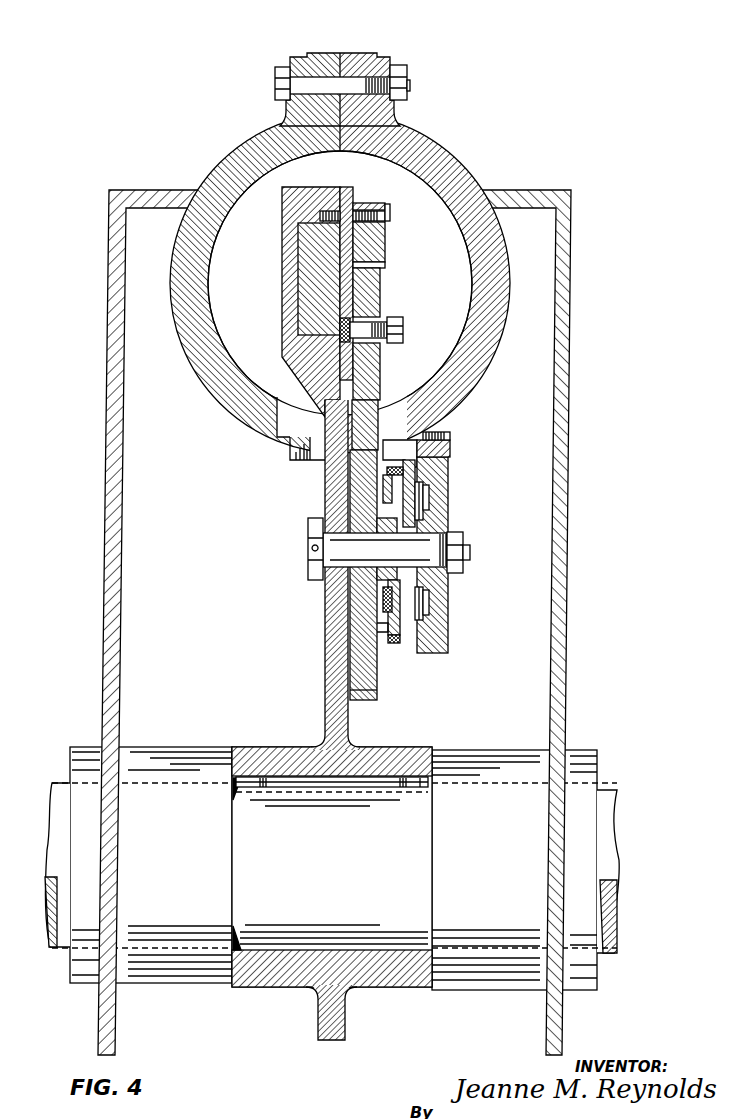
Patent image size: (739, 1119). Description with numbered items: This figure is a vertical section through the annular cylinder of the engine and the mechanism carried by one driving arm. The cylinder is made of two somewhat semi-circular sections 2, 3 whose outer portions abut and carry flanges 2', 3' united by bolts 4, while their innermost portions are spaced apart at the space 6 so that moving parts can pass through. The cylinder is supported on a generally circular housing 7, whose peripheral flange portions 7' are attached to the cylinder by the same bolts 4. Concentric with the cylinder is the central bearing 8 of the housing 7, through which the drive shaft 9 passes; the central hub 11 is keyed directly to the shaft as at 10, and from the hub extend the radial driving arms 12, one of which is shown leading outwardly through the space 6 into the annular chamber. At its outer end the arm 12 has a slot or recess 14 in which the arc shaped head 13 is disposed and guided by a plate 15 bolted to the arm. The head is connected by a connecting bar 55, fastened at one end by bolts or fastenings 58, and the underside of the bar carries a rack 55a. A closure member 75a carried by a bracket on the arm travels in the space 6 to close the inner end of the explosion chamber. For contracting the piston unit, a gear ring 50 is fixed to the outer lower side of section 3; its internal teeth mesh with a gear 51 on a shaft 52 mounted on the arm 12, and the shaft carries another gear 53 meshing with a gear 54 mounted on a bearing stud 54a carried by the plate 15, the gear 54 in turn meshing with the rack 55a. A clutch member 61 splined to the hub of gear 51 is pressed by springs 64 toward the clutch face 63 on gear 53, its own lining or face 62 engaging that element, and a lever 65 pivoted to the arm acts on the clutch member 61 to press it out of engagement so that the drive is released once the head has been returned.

The cylinder section 2 is at (323, 283).
The cylinder section 3 is at (351, 283).
The flange 2' is at (340, 74).
The flange 3' is at (340, 87).
The bolt 4 is at (275, 85).
The space 6 is at (296, 461).
The housing 7 is at (311, 622).
The peripheral flange portion 7' is at (126, 178).
The central bearing 8 is at (185, 747).
The drive shaft 9 is at (606, 812).
The key 10 is at (425, 792).
The central hub 11 is at (272, 988).
The radial driving arm 12 is at (323, 603).
The arc shaped head 13 is at (305, 285).
The slot or recess 14 is at (285, 250).
The plate 15 is at (352, 188).
The gear ring 50 is at (451, 439).
The gear 51 is at (448, 478).
The shaft 52 is at (389, 549).
The gear 53 is at (360, 701).
The gear 54 is at (381, 285).
The bearing stud 54a is at (381, 346).
The connecting bar 55 is at (387, 235).
The rack 55a is at (387, 264).
The bolts or fastenings 58 is at (388, 211).
The clutch member 61 is at (437, 602).
The clutch lining or face 62 is at (395, 643).
The clutch lining or face 63 is at (378, 633).
The spring 64 is at (440, 501).
The lever 65 is at (398, 443).
The closure member 75a is at (303, 412).